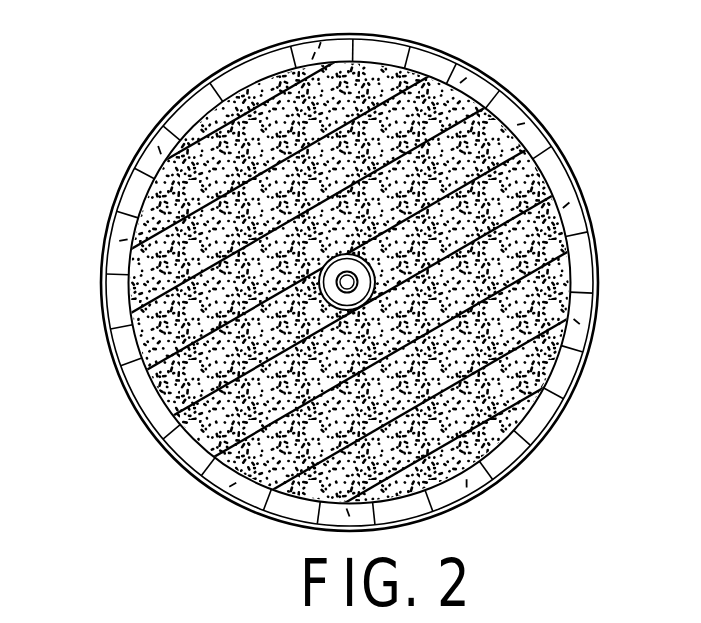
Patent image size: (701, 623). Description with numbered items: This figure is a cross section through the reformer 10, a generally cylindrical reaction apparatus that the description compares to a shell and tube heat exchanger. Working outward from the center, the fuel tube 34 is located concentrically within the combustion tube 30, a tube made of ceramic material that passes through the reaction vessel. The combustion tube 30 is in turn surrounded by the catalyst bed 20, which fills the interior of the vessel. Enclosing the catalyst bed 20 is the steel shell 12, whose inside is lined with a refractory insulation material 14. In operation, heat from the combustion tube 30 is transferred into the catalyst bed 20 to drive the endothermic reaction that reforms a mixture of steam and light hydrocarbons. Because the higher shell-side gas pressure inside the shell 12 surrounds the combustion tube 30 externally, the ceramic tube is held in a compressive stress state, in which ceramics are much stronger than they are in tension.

The reformer 10 is at (532, 72).
The steel shell 12 is at (102, 284).
The refractory insulation material 14 is at (132, 386).
The catalyst bed 20 is at (323, 110).
The combustion tube 30 is at (371, 299).
The fuel tube 34 is at (547, 184).